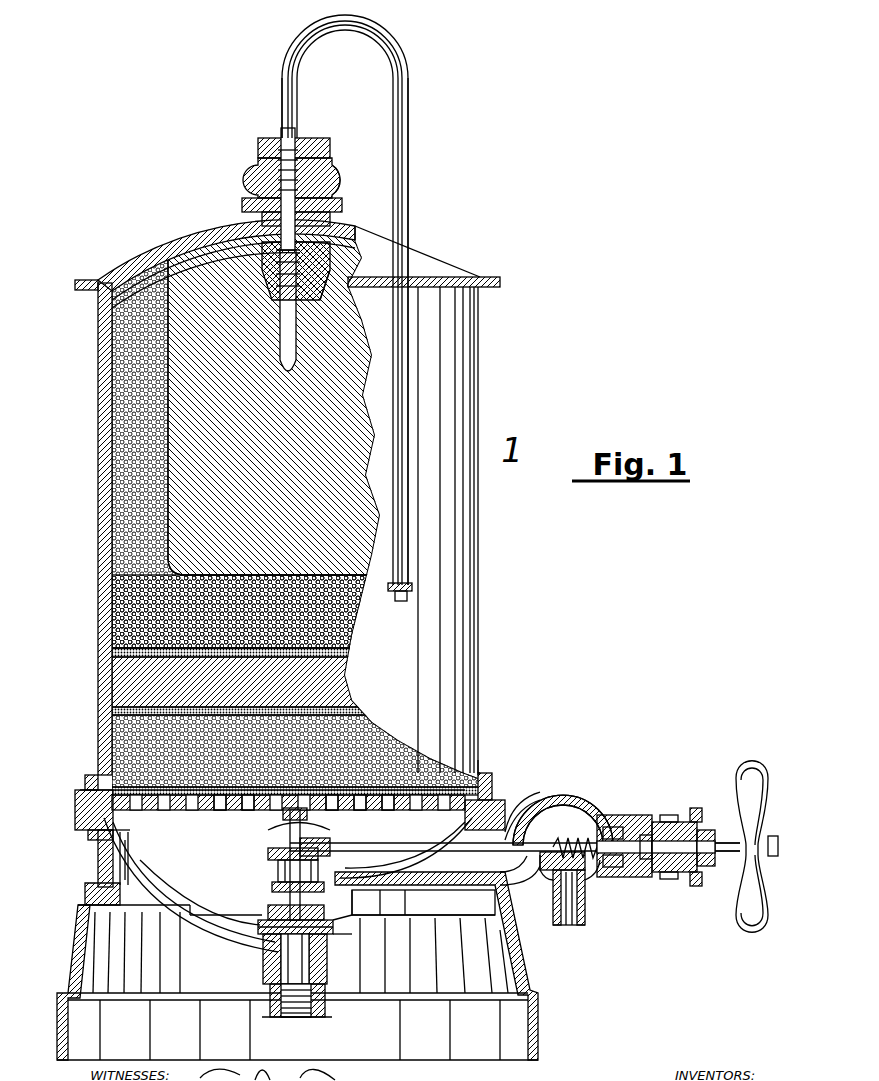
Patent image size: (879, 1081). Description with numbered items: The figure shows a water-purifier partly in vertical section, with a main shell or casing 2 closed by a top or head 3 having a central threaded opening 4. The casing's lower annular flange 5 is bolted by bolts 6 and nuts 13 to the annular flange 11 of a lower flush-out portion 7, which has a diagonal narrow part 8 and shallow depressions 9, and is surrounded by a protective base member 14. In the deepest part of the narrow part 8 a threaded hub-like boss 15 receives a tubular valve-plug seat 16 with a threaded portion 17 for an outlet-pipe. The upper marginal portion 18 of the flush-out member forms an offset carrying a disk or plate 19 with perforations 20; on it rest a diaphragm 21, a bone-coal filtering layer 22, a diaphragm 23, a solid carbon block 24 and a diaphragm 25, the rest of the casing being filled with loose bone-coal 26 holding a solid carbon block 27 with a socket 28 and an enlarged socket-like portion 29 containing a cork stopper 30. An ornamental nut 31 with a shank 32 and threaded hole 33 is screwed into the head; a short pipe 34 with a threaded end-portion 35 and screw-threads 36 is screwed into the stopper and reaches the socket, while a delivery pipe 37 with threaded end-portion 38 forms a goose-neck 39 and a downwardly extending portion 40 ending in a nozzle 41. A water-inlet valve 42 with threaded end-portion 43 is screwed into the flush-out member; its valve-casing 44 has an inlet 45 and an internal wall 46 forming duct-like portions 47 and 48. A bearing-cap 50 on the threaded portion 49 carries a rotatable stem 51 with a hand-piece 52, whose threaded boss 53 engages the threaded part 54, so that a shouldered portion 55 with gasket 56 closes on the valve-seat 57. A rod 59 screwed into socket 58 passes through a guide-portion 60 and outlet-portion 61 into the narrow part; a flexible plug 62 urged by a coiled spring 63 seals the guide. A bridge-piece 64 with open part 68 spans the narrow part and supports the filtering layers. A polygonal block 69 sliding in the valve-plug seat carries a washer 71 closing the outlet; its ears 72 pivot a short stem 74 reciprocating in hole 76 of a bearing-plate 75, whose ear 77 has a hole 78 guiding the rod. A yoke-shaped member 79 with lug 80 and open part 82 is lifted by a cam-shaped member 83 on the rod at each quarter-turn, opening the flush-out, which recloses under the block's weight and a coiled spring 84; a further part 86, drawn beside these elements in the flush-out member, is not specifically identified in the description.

The main shell or casing 2 is at (98, 478).
The closed top or head 3 is at (356, 236).
The screw-threaded opening 4 is at (242, 220).
The annular flange 5 is at (80, 790).
The bolts or screws 6 is at (88, 775).
The lower flush-out portion 7 is at (105, 858).
The narrow part 8 is at (205, 862).
The shallow depression 9 is at (156, 860).
The annular flange 11 is at (78, 815).
The nuts 13 is at (90, 835).
The surrounding member or base 14 is at (70, 950).
The hub-like boss 15 is at (262, 960).
The tubular stopper or valve-plug seat 16 is at (325, 1006).
The internally screw-threaded portion 17 is at (298, 1018).
The upper marginal portion 18 is at (288, 819).
The perforated disk or plate 19 is at (370, 819).
The holes or perforations 20 is at (208, 819).
The diaphragm 21 is at (470, 760).
The filtering layer 22 is at (135, 740).
The diaphragm 23 is at (112, 710).
The solid carbon block 24 is at (130, 672).
The diaphragm 25 is at (112, 650).
The layer of loose bone-coal 26 is at (210, 597).
The solid carbon block 27 is at (187, 418).
The socket 28 is at (287, 382).
The enlarged socket-like portion 29 is at (340, 285).
The stopper 30 is at (322, 268).
The ornamental nut 31 is at (338, 168).
The screw-threaded shank 32 is at (336, 208).
The screw-threaded hole 33 is at (258, 180).
The short pipe or tube 34 is at (262, 165).
The screw-threaded end-portion 35 is at (205, 242).
The screw-threads 36 is at (178, 268).
The delivery pipe 37 is at (282, 95).
The screw-threaded end-portion 38 is at (298, 134).
The goose-neck 39 is at (347, 22).
The downwardly extending portion 40 is at (409, 198).
The delivery nozzle 41 is at (398, 602).
The water-inlet valve 42 is at (580, 792).
The screw-threaded end-portion 43 is at (443, 887).
The valve-casing 44 is at (572, 797).
The inlet 45 is at (570, 930).
The internally disposed wall 46 is at (602, 815).
The duct-like portion 47 is at (584, 922).
The duct-like portion 48 is at (548, 800).
The screw-threaded portion 49 is at (692, 808).
The bearing-cap 50 is at (706, 832).
The stem 51 is at (735, 853).
The hand-piece 52 is at (770, 896).
The screw-threaded boss 53 is at (642, 830).
The internally screw-threaded part 54 is at (668, 815).
The shouldered valve or plug-portion 55 is at (648, 876).
The flexible gasket or washer 56 is at (612, 870).
The valve-seat 57 is at (598, 840).
The screw-threaded socket 58 is at (655, 872).
The stem or rod 59 is at (395, 819).
The guide-portion 60 is at (515, 800).
The outlet-portion 61 is at (415, 903).
The flexible plug or block 62 is at (556, 910).
The coiled spring 63 is at (600, 862).
The bridge-piece or bar 64 is at (246, 816).
The open part 68 is at (383, 720).
The polygonal member or block 69 is at (272, 990).
The gasket or washer 71 is at (340, 950).
The perforated ears 72 is at (262, 930).
The short stem 74 is at (345, 925).
The bearing-plate 75 is at (251, 864).
The hole or perforation 76 is at (273, 878).
The upwardly projecting ear 77 is at (253, 843).
The hole or perforation 78 is at (264, 871).
The yoke-shaped member 79 is at (301, 863).
The lug or projection 80 is at (400, 745).
The open part 82 is at (342, 819).
The cam-shaped member 83 is at (368, 903).
The coiled spring 84 is at (272, 906).
The chamber wall 86 is at (392, 903).